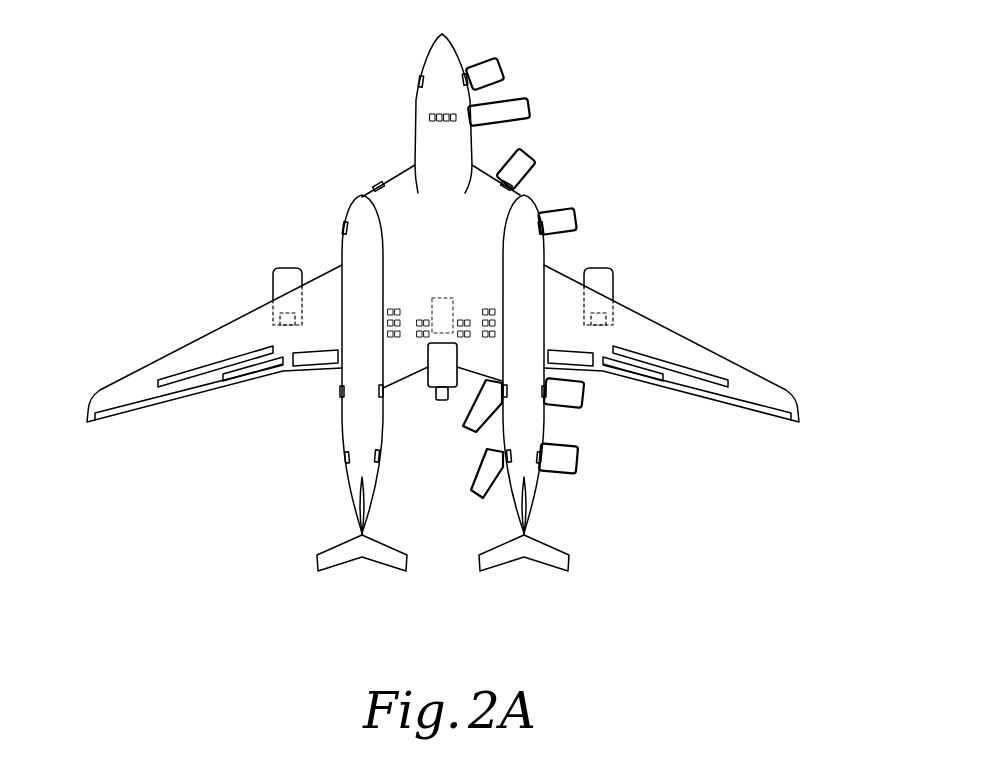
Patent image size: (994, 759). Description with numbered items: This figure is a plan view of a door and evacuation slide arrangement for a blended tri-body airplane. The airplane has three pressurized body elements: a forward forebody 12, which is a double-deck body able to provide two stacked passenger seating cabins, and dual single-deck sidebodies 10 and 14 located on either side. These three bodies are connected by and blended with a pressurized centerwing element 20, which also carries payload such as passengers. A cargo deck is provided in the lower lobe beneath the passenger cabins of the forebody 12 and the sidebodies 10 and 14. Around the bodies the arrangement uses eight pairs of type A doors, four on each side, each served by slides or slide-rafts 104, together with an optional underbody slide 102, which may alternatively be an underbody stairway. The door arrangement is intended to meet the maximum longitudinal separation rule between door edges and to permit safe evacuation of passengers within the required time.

The sidebody 10 is at (342, 420).
The forebody 12 is at (459, 53).
The pressurized centerwing element 20 is at (380, 186).
The sidebody 14 is at (497, 435).
The underbody slide 102 is at (430, 336).
The slides or slide-rafts 104 is at (525, 171).